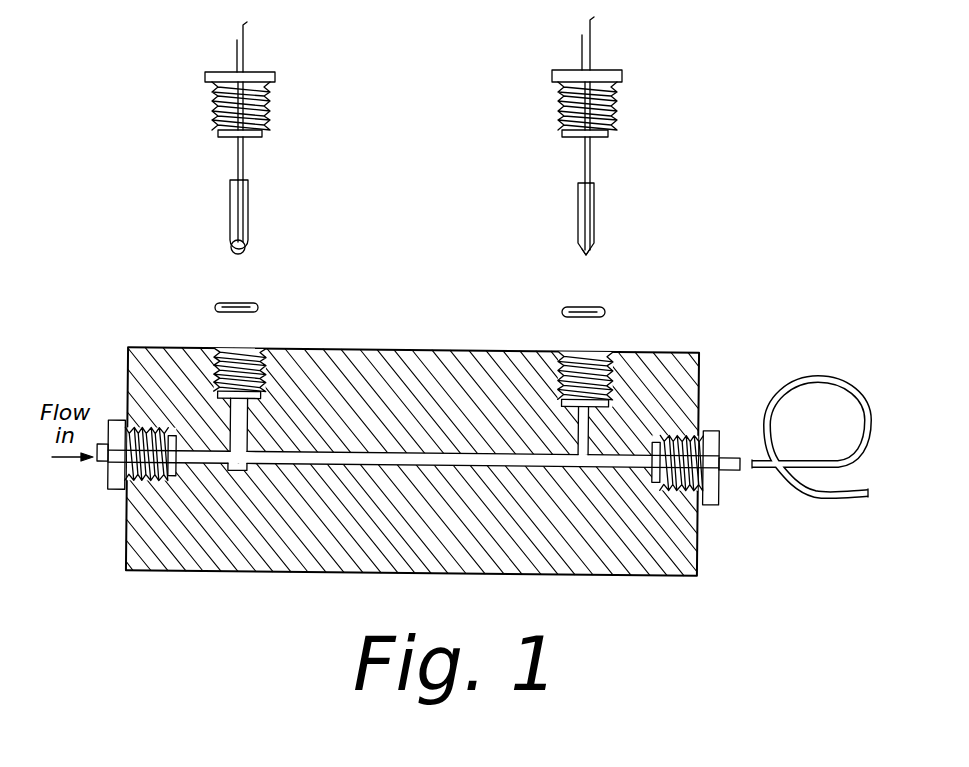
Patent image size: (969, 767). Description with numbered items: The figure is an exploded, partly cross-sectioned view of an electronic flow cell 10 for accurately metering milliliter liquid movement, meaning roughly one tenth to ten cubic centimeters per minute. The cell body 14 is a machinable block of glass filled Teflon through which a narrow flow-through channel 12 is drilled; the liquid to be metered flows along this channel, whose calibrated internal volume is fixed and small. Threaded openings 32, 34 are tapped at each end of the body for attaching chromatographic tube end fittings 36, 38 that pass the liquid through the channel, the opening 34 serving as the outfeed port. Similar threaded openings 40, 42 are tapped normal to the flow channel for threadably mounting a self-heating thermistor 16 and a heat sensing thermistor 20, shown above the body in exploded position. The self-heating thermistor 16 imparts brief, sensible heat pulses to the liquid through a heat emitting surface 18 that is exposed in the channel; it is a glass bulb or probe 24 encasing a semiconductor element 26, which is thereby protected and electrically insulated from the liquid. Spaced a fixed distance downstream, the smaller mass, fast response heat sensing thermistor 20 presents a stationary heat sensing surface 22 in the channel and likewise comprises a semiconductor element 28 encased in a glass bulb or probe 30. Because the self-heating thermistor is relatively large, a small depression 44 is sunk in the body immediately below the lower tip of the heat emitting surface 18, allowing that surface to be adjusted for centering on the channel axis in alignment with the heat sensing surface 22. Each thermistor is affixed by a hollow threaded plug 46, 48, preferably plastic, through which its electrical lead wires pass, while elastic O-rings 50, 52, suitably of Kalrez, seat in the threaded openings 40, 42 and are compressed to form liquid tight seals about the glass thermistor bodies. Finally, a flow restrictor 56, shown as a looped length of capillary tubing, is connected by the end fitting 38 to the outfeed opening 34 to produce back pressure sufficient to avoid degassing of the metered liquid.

The electronic flow cell 10 is at (138, 586).
The flow-through channel 12 is at (193, 460).
The cell body 14 is at (608, 577).
The self-heating thermistor 16 is at (214, 203).
The heat emitting surface 18 is at (232, 253).
The heat sensing thermistor 20 is at (616, 200).
The heat sensing surface 22 is at (584, 257).
The glass bulb or probe 24 is at (230, 245).
The semiconductor element 26 is at (246, 254).
The semiconductor element 28 is at (591, 255).
The glass bulb or probe 30 is at (578, 212).
The threaded opening 32 is at (135, 438).
The threaded opening 34 is at (690, 500).
The chromatographic tube end fitting 36 is at (116, 478).
The chromatographic tube end fitting 38 is at (712, 428).
The threaded opening 40 is at (222, 372).
The threaded opening 42 is at (598, 365).
The depression 44 is at (243, 473).
The hollow threaded plug 46 is at (217, 72).
The hollow threaded plug 48 is at (622, 75).
The elastic O-ring 50 is at (260, 308).
The elastic O-ring 52 is at (560, 312).
The flow restrictor 56 is at (850, 383).